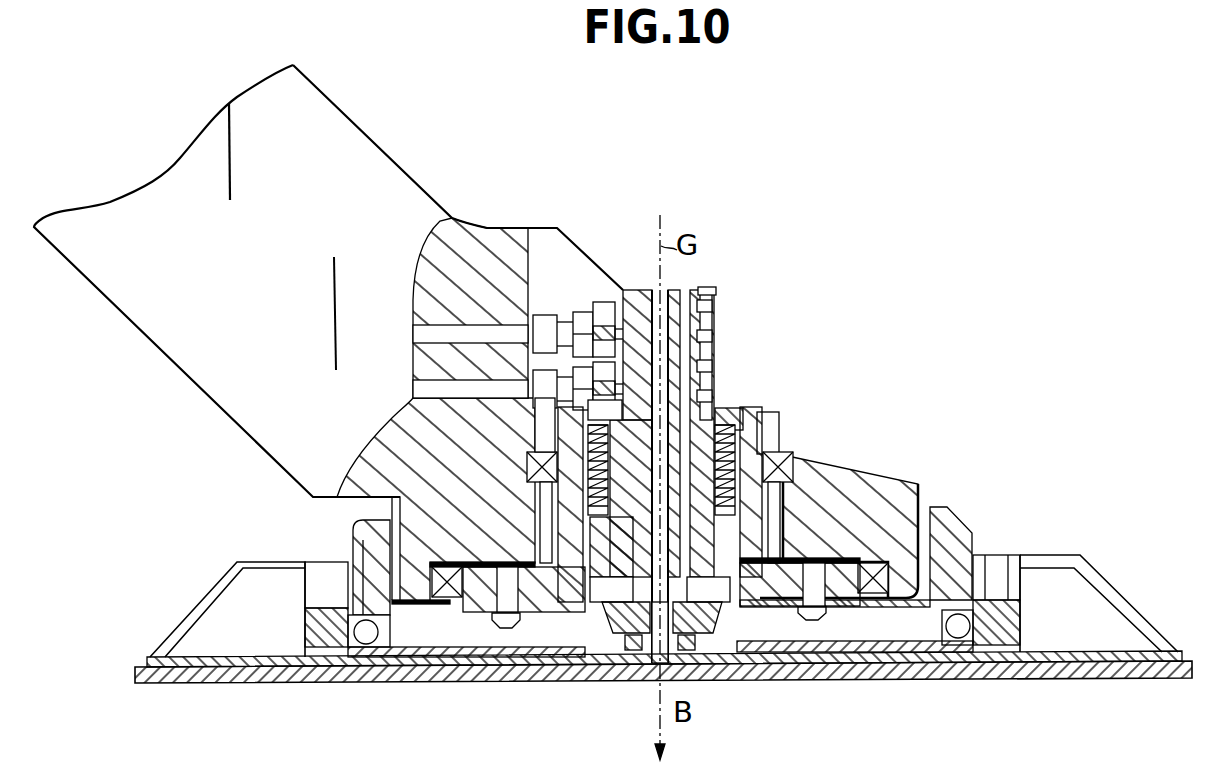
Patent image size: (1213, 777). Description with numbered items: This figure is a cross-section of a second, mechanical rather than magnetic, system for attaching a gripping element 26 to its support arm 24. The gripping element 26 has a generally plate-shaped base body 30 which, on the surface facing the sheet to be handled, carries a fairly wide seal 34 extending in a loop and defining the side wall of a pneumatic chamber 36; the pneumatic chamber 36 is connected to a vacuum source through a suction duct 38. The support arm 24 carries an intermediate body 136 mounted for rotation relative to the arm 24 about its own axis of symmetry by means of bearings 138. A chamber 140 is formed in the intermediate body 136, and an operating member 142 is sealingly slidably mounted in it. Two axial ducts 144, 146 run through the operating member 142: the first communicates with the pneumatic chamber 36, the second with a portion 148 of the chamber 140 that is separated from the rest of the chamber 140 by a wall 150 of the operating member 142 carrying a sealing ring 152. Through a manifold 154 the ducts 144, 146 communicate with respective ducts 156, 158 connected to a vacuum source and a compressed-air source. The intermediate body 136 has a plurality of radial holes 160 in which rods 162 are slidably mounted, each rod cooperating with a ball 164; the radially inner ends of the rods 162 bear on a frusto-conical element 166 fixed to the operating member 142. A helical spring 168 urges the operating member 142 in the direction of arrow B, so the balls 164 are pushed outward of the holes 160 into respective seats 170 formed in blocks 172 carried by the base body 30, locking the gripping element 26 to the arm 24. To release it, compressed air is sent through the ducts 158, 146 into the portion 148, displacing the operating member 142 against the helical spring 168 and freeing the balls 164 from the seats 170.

The support arm 24 is at (328, 118).
The first gripping element 26 is at (1102, 518).
The base body 30 is at (290, 675).
The seal 34 is at (212, 672).
The pneumatic chamber 36 is at (505, 672).
The suction duct 38 is at (470, 242).
The intermediate body 136 is at (505, 470).
The bearings 138 is at (556, 438).
The chamber 140 is at (757, 425).
The operating member 142 is at (718, 410).
The axial duct 144 is at (700, 350).
The axial duct 146 is at (702, 375).
The portion of the chamber 148 is at (712, 655).
The wall 150 is at (590, 600).
The sealing ring 152 is at (527, 468).
The manifold 154 is at (592, 290).
The duct 156 is at (420, 318).
The duct 158 is at (428, 393).
The radial holes 160 is at (432, 650).
The rods 162 is at (903, 630).
The ball 164 is at (357, 548).
The frusto-conical element 166 is at (612, 655).
The helical spring 168 is at (762, 463).
The seats 170 is at (347, 620).
The blocks 172 is at (305, 632).